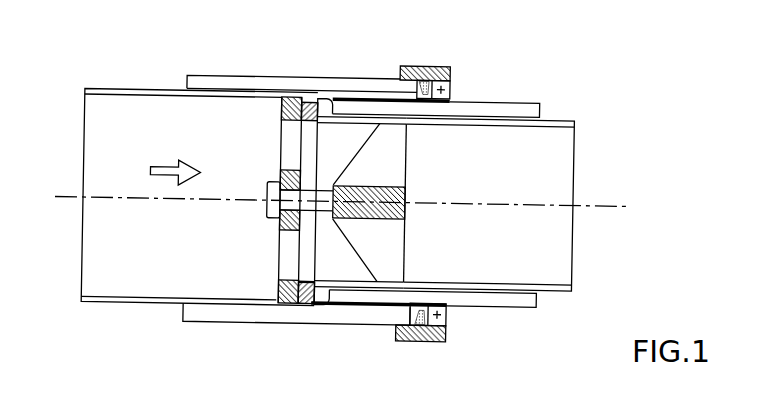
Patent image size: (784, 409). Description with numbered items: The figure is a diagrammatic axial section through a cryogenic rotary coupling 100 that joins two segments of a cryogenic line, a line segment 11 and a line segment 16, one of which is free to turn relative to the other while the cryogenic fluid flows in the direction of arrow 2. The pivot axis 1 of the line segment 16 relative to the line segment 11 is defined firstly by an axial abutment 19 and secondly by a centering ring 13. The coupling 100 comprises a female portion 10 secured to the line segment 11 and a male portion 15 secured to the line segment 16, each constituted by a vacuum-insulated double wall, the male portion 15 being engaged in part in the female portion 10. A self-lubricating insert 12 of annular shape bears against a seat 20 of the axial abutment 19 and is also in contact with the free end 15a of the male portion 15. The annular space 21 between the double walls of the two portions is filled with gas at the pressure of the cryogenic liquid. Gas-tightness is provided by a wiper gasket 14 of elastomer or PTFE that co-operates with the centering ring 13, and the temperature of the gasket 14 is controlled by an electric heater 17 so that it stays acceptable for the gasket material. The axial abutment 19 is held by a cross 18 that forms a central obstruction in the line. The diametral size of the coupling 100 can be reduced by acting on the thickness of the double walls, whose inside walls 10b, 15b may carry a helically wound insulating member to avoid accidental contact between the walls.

The cryogenic rotary coupling 100 is at (257, 58).
The pivot axis 1 is at (68, 200).
The arrow 2 is at (166, 163).
The female portion 10 is at (218, 314).
The inside wall 10b is at (384, 90).
The line segment 11 is at (118, 298).
The self-lubricating insert 12 is at (301, 304).
The centering ring 13 is at (447, 311).
The wiper gasket 14 is at (417, 334).
The male portion 15 is at (521, 291).
The free end 15a is at (332, 93).
The inside wall 15b is at (493, 286).
The line segment 16 is at (553, 274).
The electric heater 17 is at (433, 58).
The cross 18 is at (410, 188).
The axial abutment 19 is at (266, 210).
The seat 20 is at (287, 306).
The annular space 21 is at (365, 312).